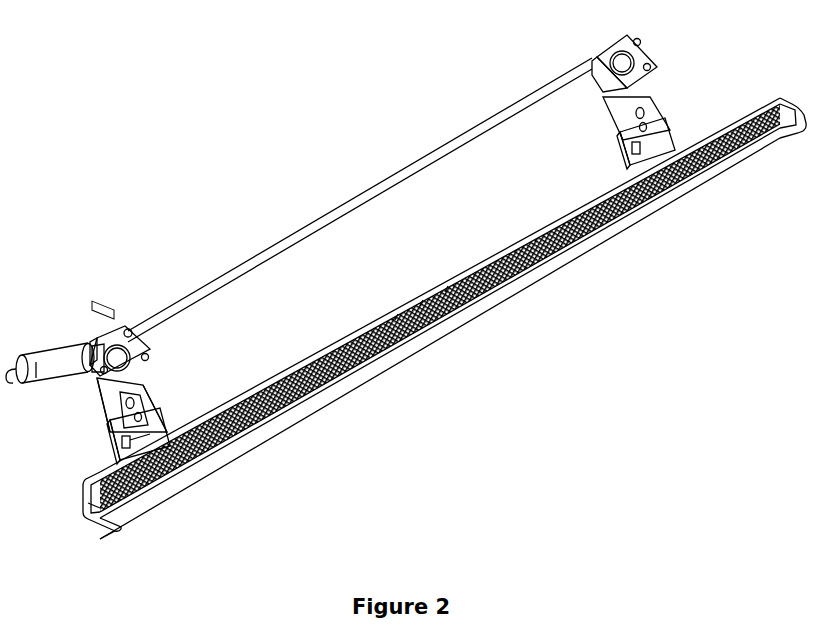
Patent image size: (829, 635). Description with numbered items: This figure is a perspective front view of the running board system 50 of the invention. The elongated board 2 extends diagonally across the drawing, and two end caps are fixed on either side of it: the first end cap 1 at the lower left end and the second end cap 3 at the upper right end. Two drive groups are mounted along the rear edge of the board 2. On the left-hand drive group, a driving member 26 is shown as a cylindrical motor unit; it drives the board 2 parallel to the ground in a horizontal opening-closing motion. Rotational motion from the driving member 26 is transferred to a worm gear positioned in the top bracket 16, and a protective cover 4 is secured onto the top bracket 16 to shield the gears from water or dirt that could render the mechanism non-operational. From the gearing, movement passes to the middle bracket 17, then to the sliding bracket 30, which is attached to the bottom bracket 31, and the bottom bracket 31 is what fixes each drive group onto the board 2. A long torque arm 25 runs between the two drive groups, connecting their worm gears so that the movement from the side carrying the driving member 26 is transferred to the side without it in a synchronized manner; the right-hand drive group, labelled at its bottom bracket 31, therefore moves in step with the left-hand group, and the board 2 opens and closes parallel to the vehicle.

The running board system 50 is at (90, 60).
The first end cap 1 is at (84, 500).
The board 2 is at (457, 326).
The second end cap 3 is at (792, 104).
The protective cover 4 is at (122, 360).
The top bracket 16 is at (118, 333).
The middle bracket 17 is at (132, 386).
The torque arm 25 is at (360, 199).
The driving member 26 is at (56, 362).
The sliding bracket 30 is at (114, 432).
The bottom bracket 31 is at (660, 138).